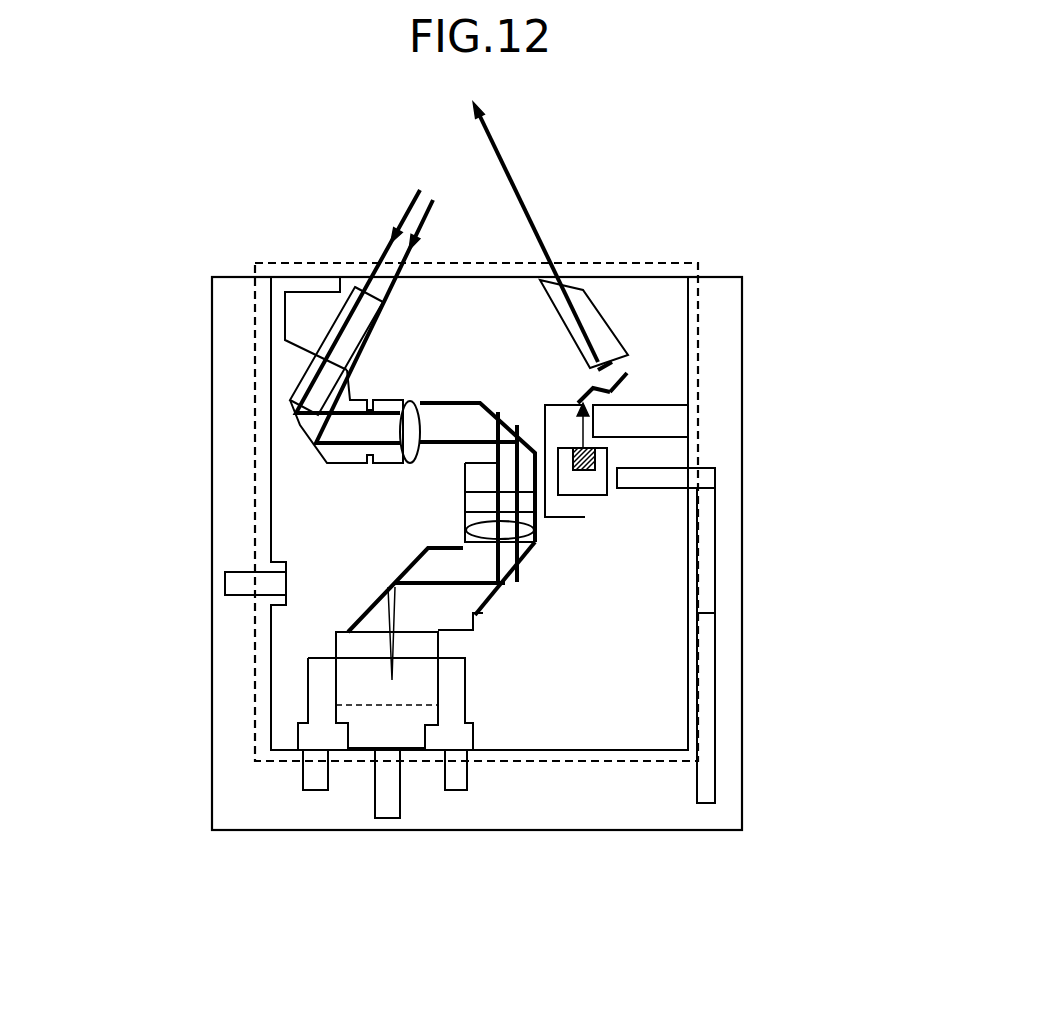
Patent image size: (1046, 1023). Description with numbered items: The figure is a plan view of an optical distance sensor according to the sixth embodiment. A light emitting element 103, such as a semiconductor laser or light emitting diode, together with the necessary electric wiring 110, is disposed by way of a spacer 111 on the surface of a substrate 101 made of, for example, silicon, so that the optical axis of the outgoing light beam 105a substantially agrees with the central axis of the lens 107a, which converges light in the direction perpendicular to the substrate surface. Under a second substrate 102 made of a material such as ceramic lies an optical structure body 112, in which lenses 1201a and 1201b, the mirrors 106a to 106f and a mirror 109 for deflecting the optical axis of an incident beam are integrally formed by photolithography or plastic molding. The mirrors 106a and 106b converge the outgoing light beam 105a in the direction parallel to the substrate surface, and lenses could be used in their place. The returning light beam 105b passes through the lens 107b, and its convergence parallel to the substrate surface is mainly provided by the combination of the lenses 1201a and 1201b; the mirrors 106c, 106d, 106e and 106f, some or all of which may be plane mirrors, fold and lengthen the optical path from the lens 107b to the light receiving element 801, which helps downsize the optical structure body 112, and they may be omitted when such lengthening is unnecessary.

The substrate 101 is at (728, 307).
The second substrate 102 is at (303, 262).
The light emitting element 103 is at (607, 455).
The outgoing light beam 105a is at (518, 195).
The outgoing light beam 105b is at (412, 212).
The mirror intended for converging incident light in a parallel direction to a surfa 106a is at (592, 387).
The mirror intended for converging incident light in a parallel direction to a surfa 106b is at (620, 387).
The mirror intended for converging incident light in a parallel direction to a surfa 106c is at (310, 437).
The mirror intended for converging incident light in a parallel direction to a surfa 106d is at (498, 408).
The mirror intended for converging incident light in a parallel direction to a surfa 106e is at (487, 613).
The mirror intended for converging incident light in a parallel direction to a surfa 106f is at (370, 608).
The lens intended for converging a light beam in a perpendicular direction to a surf 107a is at (607, 323).
The lens intended for converging incident light in the perpendicular direction to a 107b is at (335, 333).
The mirror intended for deflection of the optical axis of an incident light beam 109 is at (335, 687).
The electric wiring 110 is at (453, 793).
The spacer 111 is at (598, 485).
The optical structure body 112 is at (673, 303).
The light receiving element 801 is at (452, 743).
The lens intended for converging incident light in a parallel direction to a surface 1201a is at (413, 450).
The lens intended for converging incident light in a parallel direction to a surface 1201b is at (466, 540).